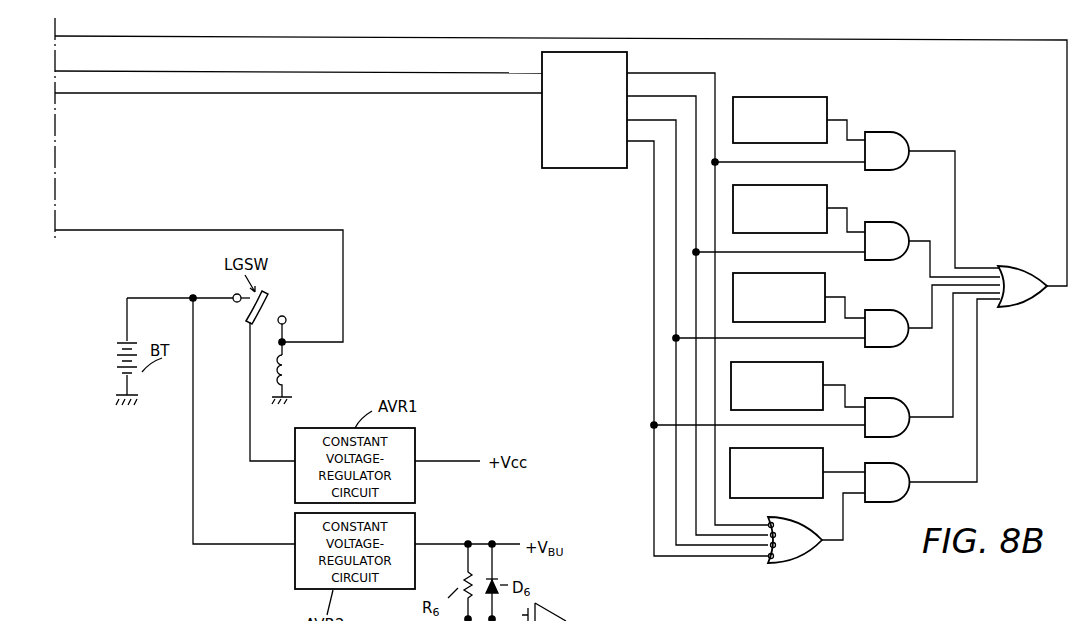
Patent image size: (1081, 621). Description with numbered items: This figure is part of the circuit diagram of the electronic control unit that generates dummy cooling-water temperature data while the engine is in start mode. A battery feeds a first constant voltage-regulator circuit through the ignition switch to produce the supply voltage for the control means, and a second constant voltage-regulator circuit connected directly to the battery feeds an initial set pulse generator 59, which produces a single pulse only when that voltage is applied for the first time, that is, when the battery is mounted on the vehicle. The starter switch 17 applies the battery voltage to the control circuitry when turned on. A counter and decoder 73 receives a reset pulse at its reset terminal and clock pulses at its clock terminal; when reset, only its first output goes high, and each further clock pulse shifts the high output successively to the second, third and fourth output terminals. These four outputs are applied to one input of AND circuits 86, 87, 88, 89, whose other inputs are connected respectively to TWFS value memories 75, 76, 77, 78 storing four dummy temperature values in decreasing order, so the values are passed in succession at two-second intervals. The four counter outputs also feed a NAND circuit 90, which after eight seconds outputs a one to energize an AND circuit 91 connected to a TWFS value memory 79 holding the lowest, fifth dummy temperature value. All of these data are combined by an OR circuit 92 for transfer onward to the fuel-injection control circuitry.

The starter switch 17 is at (289, 312).
The counter and decoder 73 is at (600, 168).
The TWFS value memory 75 is at (793, 97).
The TWFS value memory 76 is at (810, 183).
The TWFS value memory 77 is at (810, 271).
The TWFS value memory 78 is at (808, 360).
The TWFS value memory 79 is at (805, 446).
The AND circuit 86 is at (890, 131).
The AND circuit 87 is at (887, 222).
The AND circuit 88 is at (887, 310).
The AND circuit 89 is at (890, 399).
The NAND circuit 90 is at (800, 563).
The AND circuit 91 is at (892, 463).
The OR circuit 92 is at (1018, 263).
The initial set pulse generator 59 is at (568, 591).